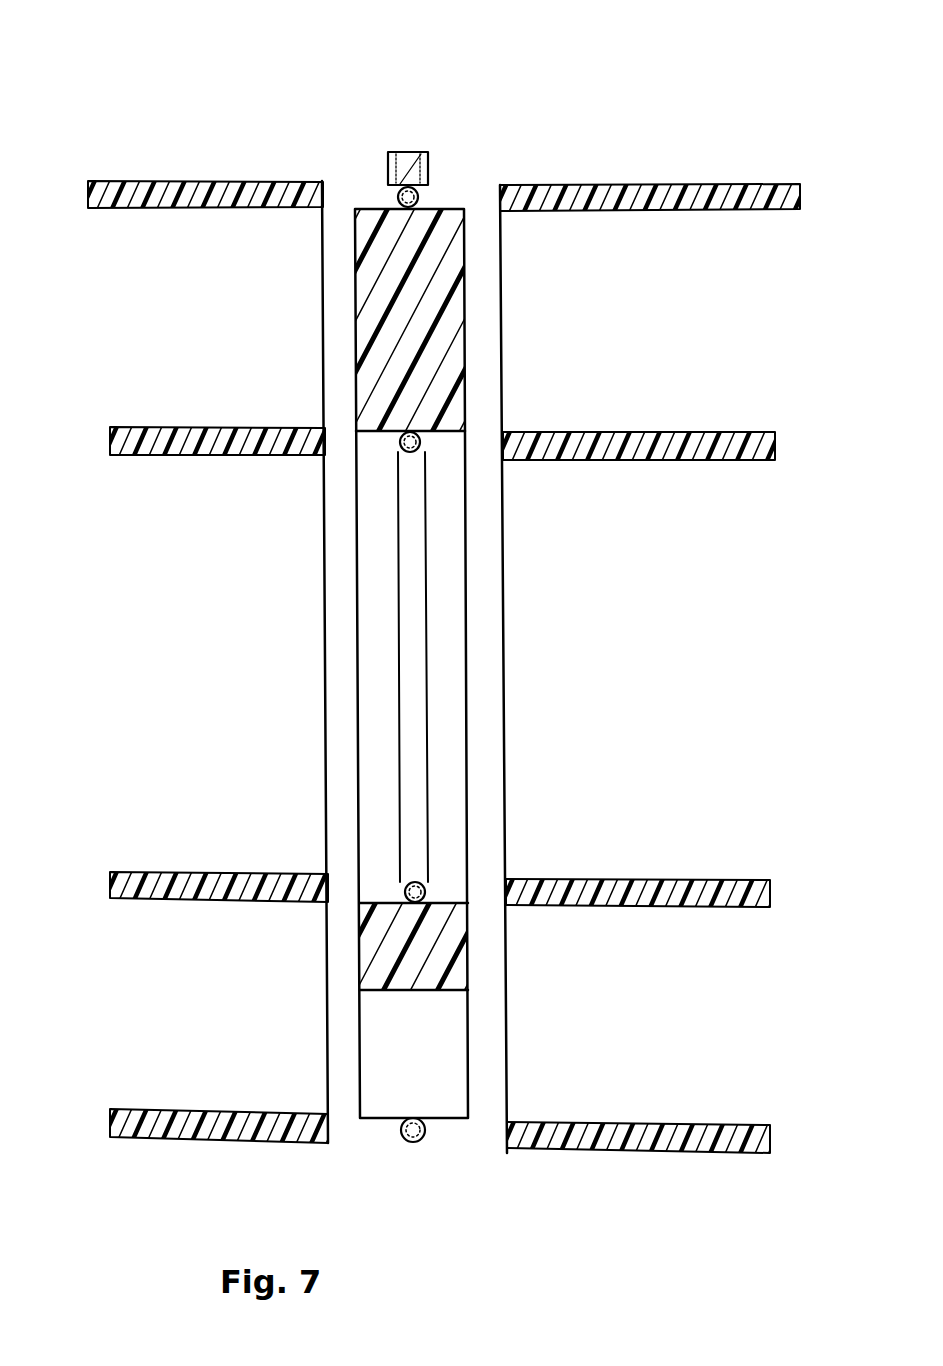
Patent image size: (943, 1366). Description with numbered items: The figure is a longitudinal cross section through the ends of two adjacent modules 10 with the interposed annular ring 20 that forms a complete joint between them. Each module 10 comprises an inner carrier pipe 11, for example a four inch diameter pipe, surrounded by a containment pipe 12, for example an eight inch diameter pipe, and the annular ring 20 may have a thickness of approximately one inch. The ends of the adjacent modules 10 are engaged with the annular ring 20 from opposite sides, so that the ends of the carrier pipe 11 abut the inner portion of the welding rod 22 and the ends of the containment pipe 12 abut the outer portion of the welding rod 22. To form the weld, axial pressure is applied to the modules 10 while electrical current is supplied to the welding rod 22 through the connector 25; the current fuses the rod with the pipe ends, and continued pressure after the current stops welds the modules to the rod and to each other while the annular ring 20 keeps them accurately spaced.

The module 10 is at (242, 172).
The carrier pipe 11 is at (187, 427).
The containment pipe 12 is at (160, 182).
The annular ring 20 is at (465, 360).
The welding rod 22 is at (420, 196).
The connector 25 is at (412, 152).